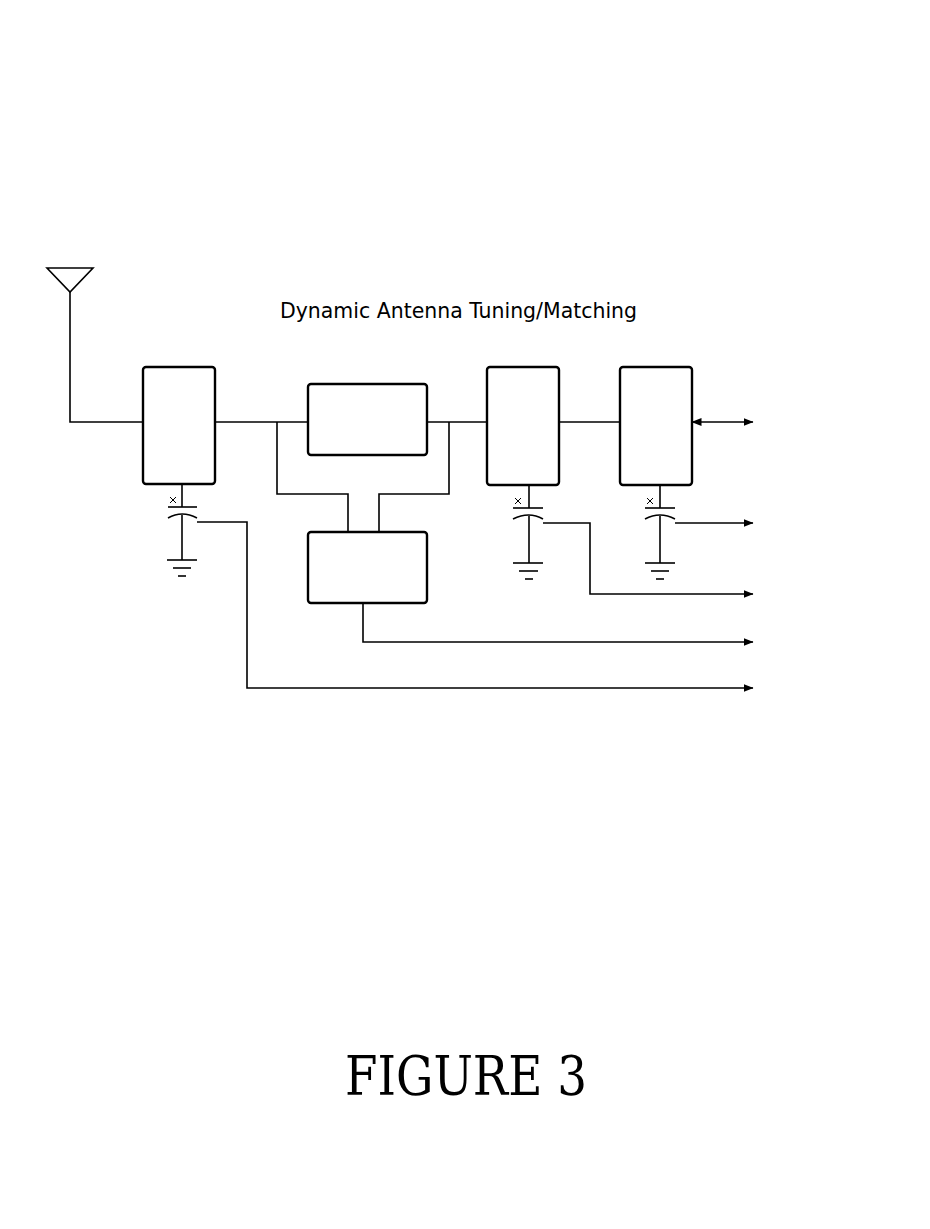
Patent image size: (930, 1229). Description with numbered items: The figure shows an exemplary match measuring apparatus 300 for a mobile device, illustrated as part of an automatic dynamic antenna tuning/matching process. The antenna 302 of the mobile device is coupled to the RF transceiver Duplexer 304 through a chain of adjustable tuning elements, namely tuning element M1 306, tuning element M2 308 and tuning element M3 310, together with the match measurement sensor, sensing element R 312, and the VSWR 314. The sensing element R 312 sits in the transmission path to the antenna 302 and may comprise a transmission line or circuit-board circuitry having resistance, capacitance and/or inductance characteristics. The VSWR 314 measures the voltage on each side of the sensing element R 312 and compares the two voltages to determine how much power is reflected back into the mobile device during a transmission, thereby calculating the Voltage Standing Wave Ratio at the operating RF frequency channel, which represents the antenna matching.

The match measuring apparatus 300 is at (642, 127).
The antenna 302 is at (98, 220).
The RF transceiver Duplexer 304 is at (822, 372).
The tuning element M1 306 is at (127, 510).
The tuning element M2 308 is at (525, 353).
The tuning element M3 310 is at (662, 350).
The sensing element R 312 is at (365, 362).
The VSWR 314 is at (340, 623).